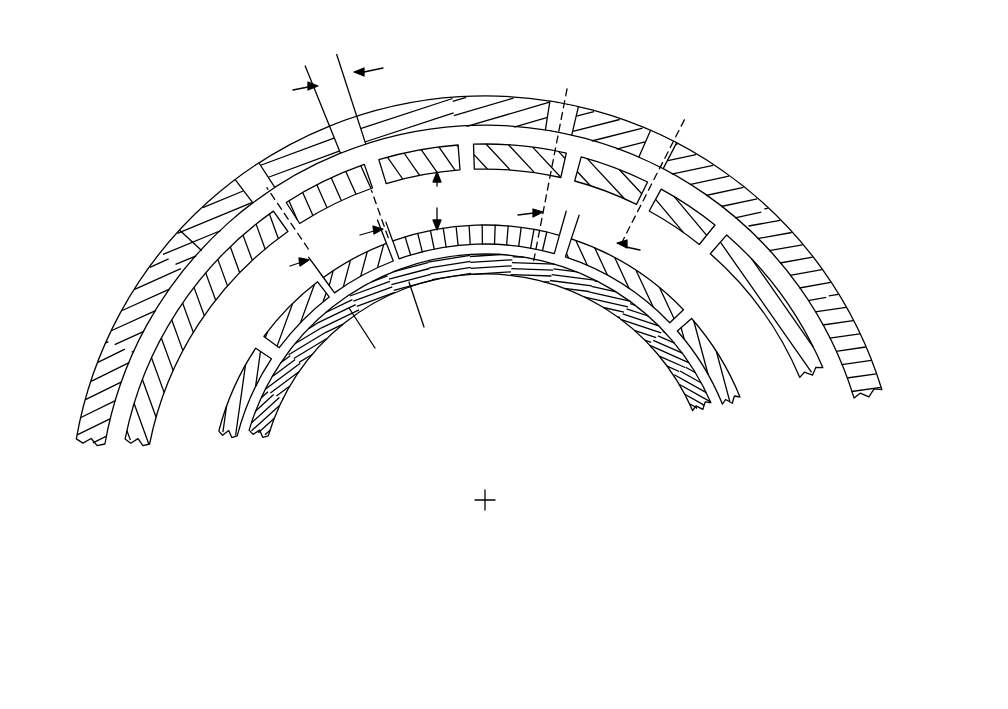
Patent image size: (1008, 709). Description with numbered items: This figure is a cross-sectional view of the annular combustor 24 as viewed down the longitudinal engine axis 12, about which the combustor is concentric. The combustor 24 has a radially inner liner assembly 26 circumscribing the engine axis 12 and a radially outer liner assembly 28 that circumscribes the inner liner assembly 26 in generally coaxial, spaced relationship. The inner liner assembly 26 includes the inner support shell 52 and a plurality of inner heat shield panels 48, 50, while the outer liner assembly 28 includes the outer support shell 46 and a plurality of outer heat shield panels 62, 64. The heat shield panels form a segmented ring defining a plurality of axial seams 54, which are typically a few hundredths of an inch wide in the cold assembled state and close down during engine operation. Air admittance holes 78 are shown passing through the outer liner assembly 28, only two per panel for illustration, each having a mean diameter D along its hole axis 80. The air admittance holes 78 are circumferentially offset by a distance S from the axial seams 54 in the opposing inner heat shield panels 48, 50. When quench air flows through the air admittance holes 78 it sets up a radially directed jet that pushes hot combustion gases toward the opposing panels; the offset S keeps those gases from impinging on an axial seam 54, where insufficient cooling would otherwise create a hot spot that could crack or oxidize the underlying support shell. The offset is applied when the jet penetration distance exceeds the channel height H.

The engine axis 12 is at (488, 486).
The annular combustor 24 is at (206, 101).
The inner liner assembly 26 is at (489, 339).
The outer liner assembly 28 is at (479, 246).
The outer support shell 46 is at (830, 281).
The inner heat shield panel 48 is at (486, 331).
The inner heat shield panel 50 is at (704, 352).
The inner support shell 52 is at (272, 398).
The axial seam 54 is at (180, 231).
The outer heat shield panel 62 is at (474, 267).
The outer heat shield panel 64 is at (636, 132).
The air admittance hole 78 is at (288, 205).
The hole axis 80 is at (249, 175).